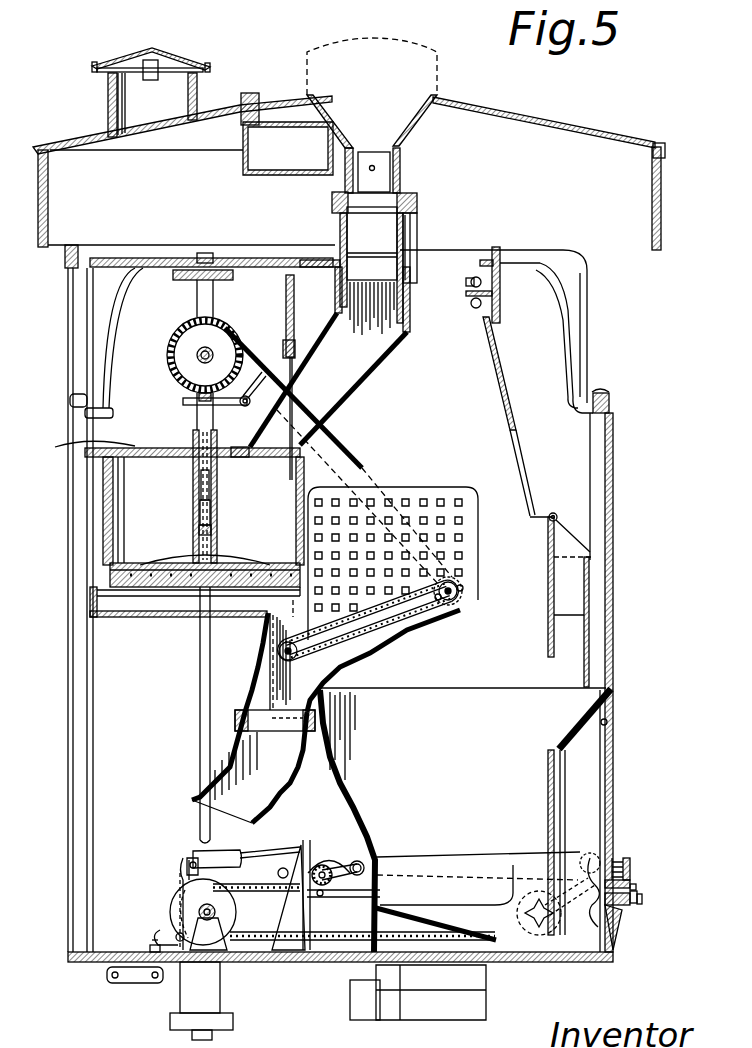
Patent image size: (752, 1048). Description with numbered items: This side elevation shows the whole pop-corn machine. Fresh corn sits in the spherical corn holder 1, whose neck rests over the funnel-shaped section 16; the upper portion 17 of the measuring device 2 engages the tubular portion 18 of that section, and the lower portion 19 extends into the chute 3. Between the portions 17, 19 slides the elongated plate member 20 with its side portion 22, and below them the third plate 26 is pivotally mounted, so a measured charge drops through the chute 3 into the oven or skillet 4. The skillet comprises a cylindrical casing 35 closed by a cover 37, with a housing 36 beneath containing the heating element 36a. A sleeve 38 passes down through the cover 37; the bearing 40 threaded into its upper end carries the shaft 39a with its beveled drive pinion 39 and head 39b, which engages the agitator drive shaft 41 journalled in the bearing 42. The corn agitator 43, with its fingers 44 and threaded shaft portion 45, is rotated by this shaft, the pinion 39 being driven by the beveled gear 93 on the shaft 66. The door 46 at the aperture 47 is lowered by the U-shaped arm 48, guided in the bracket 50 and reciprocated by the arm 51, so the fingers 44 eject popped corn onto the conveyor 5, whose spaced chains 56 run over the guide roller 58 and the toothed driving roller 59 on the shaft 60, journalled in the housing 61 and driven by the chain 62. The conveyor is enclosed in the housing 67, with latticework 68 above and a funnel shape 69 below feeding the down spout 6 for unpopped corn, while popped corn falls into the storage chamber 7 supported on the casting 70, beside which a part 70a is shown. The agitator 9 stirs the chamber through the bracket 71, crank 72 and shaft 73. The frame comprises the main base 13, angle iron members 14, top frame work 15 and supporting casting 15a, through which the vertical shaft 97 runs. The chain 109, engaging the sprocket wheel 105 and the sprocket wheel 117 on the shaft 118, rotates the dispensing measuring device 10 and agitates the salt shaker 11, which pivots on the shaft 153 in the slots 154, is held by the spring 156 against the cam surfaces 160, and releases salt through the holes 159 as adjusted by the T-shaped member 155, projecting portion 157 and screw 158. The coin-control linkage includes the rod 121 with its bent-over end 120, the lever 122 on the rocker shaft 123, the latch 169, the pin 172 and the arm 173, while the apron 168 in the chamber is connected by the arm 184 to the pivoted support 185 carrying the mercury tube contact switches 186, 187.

The corn holder 1 is at (443, 72).
The measuring device 2 is at (386, 227).
The chute 3 is at (394, 350).
The oven or skillet 4 is at (110, 508).
The conveyor 5 is at (416, 632).
The down spout 6 is at (280, 787).
The storage chamber 7 is at (455, 760).
The agitator 9 is at (455, 900).
The dispensing measuring device 10 is at (553, 897).
The salt shaker 11 is at (613, 765).
The main base 13 is at (100, 960).
The angle iron members 14 is at (594, 482).
The top frame work 15 is at (557, 250).
The casting 15a is at (205, 290).
The funnel-shaped section 16 is at (426, 115).
The upper portion of measuring device 17 is at (400, 182).
The tubular portion 18 is at (398, 165).
The lower portion of measuring device 19 is at (416, 231).
The slidable elongated plate member 20 is at (332, 200).
The side portion 22 is at (419, 222).
The third plate 26 is at (360, 272).
The cylindrical casing 35 is at (103, 480).
The housing 36 is at (105, 577).
The heating element 36a is at (170, 588).
The cover 37 is at (95, 457).
The sleeve 38 is at (218, 502).
The beveled drive pinion 39 is at (196, 392).
The shaft 39a is at (193, 470).
The head 39b is at (200, 487).
The bearing 40 is at (185, 403).
The agitator drive shaft 41 is at (215, 490).
The bearing 42 is at (213, 538).
The corn agitator 43 is at (250, 565).
The fingers 44 is at (200, 560).
The shaft portion 45 is at (200, 528).
The door 46 is at (330, 495).
The aperture 47 is at (308, 490).
The U-shaped arm 48 is at (288, 377).
The bracket 50 is at (287, 305).
The arm 51 is at (296, 352).
The chains 56 is at (362, 658).
The roller 58 is at (280, 648).
The driving roller 59 is at (475, 580).
The shaft 60 is at (475, 592).
The housing 61 is at (446, 622).
The chain 62 is at (337, 445).
The shaft 66 is at (200, 353).
The housing 67 is at (459, 493).
The metal latticework 68 is at (423, 503).
The funnel shape 69 is at (275, 688).
The casting 70 is at (492, 893).
The trough rod 70a is at (380, 893).
The bracket 71 is at (347, 893).
The crank 72 is at (318, 898).
The shaft 73 is at (322, 864).
The beveled gear 93 is at (195, 325).
The vertically extending shaft 97 is at (205, 730).
The sprocket wheel 105 is at (230, 900).
The chain 109 is at (248, 890).
The sprocket wheel 117 is at (508, 917).
The shaft 118 is at (535, 920).
The bent-over end 120 is at (372, 838).
The rod 121 is at (282, 845).
The lever 122 is at (176, 900).
The rocker shaft 123 is at (177, 934).
The shaft 153 is at (609, 725).
The slots 154 is at (609, 717).
The T-shaped adjusting member 155 is at (631, 882).
The spring 156 is at (626, 856).
The projecting portion 157 is at (638, 905).
The screw 158 is at (643, 897).
The holes 159 is at (616, 925).
The cam surfaces 160 is at (594, 912).
The apron 168 is at (548, 543).
The latch 169 is at (552, 513).
The pin 172 is at (150, 948).
The arm 173 is at (128, 982).
The arm 184 is at (497, 357).
The support 185 is at (468, 303).
The mercury tube contact switch 186 is at (474, 314).
The mercury contact tube 187 is at (470, 282).